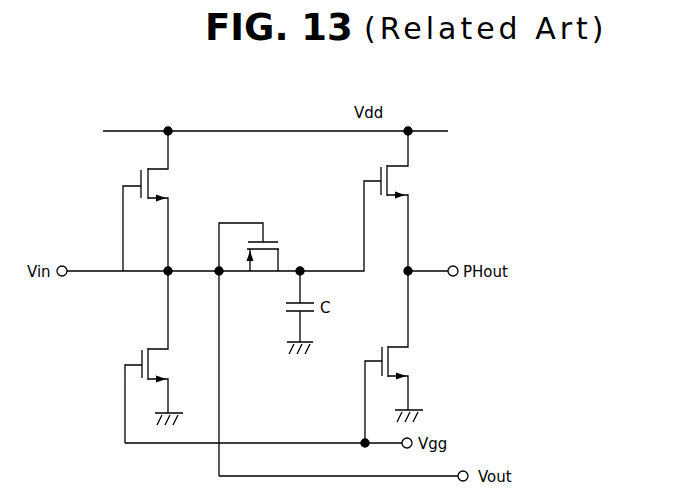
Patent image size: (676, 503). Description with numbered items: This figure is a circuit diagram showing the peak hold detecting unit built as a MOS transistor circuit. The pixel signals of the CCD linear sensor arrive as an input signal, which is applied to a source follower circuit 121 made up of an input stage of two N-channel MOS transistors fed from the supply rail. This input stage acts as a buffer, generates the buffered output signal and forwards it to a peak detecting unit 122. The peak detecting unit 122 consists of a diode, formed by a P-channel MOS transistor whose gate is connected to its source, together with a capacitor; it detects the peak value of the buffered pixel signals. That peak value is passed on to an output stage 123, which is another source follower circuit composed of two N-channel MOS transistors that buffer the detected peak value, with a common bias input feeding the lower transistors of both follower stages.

The source follower circuit 121 is at (107, 386).
The peak detecting unit 122 is at (250, 214).
The output stage 123 is at (468, 180).